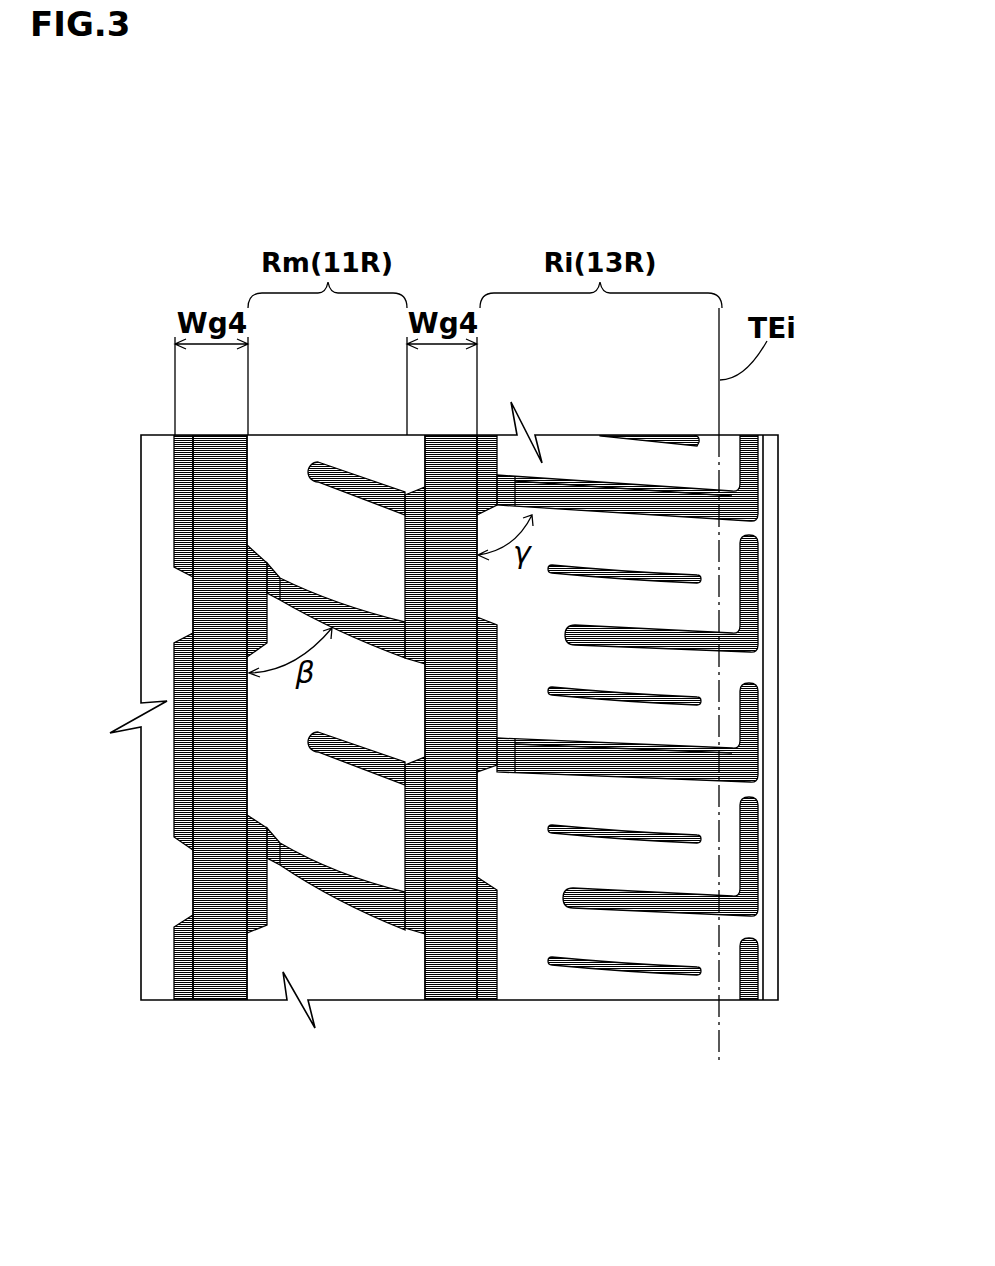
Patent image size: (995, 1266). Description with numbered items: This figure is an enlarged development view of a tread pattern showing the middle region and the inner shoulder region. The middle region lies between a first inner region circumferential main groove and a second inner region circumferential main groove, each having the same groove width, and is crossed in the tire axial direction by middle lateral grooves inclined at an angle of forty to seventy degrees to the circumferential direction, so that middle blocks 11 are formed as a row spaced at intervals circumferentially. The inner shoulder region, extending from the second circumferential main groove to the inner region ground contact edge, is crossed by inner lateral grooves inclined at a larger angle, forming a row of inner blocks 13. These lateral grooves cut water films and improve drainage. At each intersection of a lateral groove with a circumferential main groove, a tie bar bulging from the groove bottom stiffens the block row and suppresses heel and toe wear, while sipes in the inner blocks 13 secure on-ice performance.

The middle block 11 is at (352, 567).
The inner block 13 is at (507, 660).